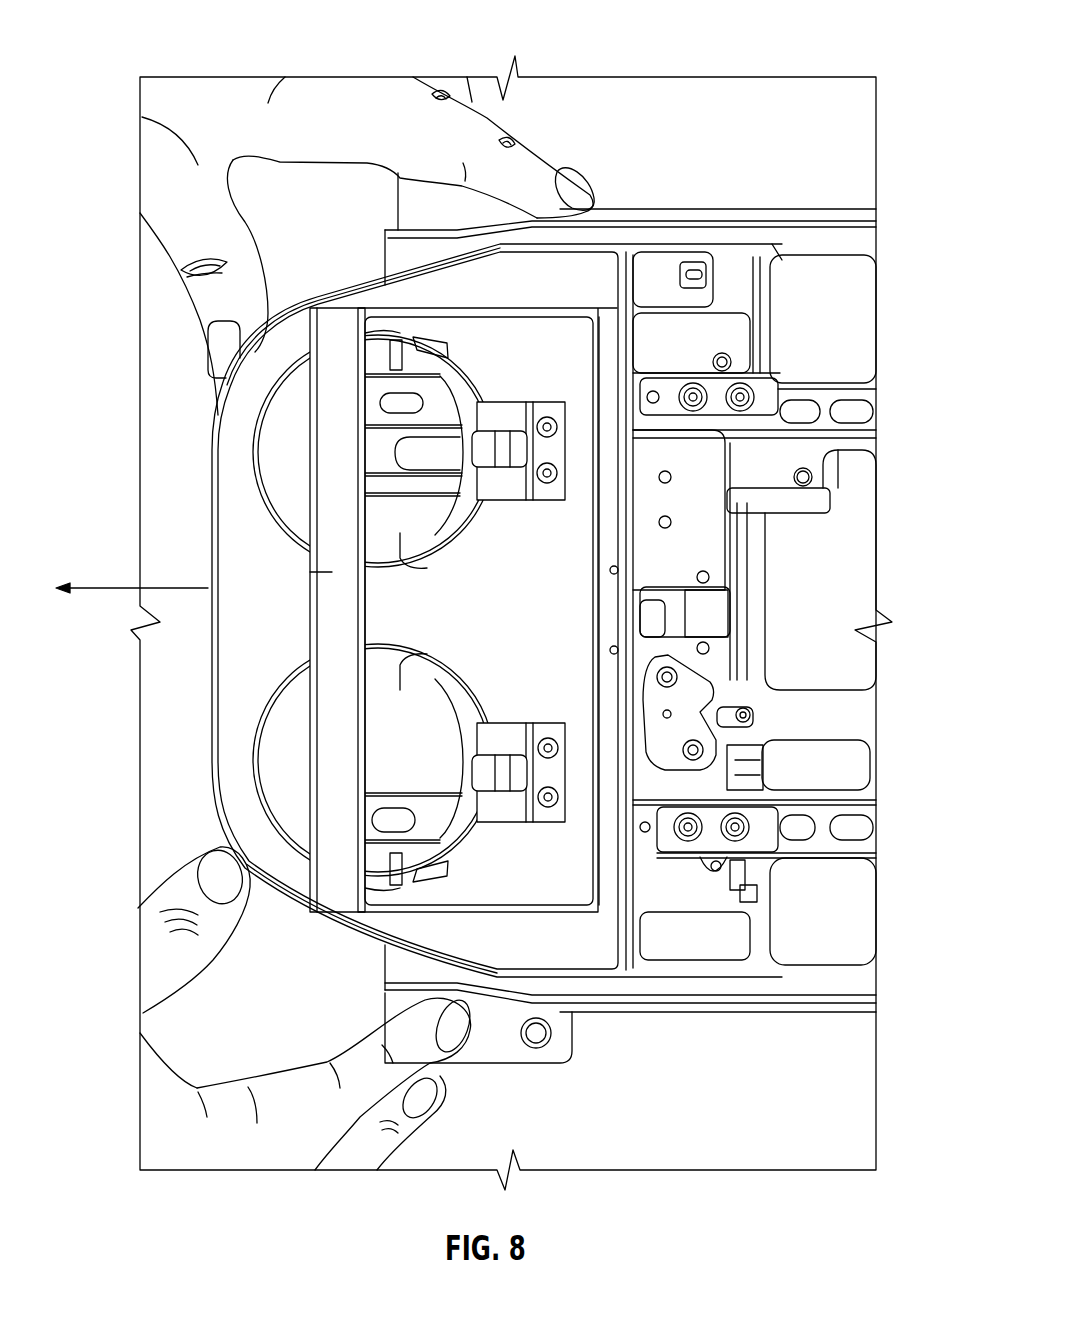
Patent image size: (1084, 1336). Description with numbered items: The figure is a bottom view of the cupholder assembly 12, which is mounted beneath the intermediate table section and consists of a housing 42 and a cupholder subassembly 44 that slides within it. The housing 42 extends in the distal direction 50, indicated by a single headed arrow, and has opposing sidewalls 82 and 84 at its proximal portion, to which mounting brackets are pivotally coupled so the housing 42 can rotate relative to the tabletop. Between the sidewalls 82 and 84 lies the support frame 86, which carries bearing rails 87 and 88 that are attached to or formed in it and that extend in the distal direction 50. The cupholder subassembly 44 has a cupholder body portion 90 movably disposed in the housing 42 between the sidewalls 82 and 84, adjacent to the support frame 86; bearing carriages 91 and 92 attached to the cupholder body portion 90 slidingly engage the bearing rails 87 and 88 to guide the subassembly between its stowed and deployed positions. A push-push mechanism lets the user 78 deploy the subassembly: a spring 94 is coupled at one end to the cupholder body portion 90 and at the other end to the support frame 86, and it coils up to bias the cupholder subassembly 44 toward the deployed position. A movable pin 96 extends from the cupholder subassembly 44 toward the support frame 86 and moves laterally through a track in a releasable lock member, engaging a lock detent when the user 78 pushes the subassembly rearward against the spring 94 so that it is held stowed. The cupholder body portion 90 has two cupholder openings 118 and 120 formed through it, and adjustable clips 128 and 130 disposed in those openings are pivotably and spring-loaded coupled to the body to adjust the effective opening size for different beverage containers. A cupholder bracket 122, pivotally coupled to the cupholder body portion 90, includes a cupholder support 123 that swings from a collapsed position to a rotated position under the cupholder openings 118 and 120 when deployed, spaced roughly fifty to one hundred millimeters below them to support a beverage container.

The cupholder assembly 12 is at (268, 100).
The housing 42 is at (710, 1012).
The cupholder subassembly 44 is at (208, 680).
The distal direction 50 is at (90, 592).
The user 78 is at (366, 623).
The sidewall 82 is at (648, 1003).
The sidewall 84 is at (650, 208).
The support frame 86 is at (858, 712).
The bearing rail 87 is at (880, 430).
The bearing rail 88 is at (872, 811).
The cupholder body portion 90 is at (333, 930).
The bearing carriage 91 is at (763, 390).
The bearing carriage 92 is at (757, 827).
The spring 94 is at (660, 623).
The movable pin 96 is at (745, 712).
The cupholder opening 118 is at (287, 743).
The cupholder opening 120 is at (283, 470).
The cupholder bracket 122 is at (330, 898).
The cupholder support 123 is at (310, 572).
The adjustable clip 128 is at (428, 548).
The adjustable clip 130 is at (460, 825).